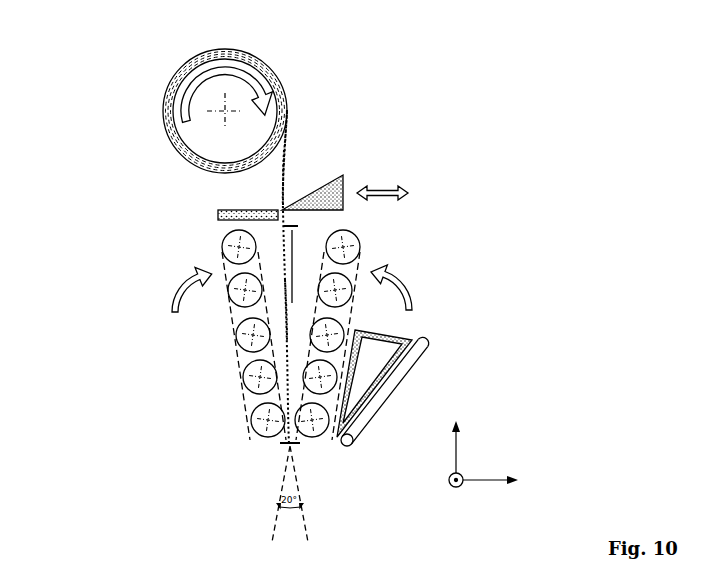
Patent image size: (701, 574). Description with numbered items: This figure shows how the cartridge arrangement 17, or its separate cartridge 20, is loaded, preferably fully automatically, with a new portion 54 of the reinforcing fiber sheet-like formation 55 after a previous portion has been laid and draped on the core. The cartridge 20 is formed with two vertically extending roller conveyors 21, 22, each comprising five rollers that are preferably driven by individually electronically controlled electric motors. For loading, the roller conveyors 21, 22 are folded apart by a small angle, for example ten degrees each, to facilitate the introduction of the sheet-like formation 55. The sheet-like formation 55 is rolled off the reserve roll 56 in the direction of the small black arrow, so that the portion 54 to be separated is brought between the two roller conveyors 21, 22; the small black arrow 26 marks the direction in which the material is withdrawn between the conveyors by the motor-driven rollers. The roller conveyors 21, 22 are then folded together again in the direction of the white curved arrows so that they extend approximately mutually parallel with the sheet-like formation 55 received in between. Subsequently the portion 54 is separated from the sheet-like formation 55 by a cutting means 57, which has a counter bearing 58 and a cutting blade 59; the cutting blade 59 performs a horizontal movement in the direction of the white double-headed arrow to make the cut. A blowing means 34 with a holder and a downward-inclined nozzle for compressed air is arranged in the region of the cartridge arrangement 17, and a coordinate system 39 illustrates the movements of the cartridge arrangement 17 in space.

The cartridge arrangement 17 is at (344, 89).
The cartridge 20 is at (285, 143).
The roller conveyor 21 is at (222, 243).
The roller conveyor 22 is at (360, 247).
The small black arrow 26 is at (293, 232).
The blowing means 34 is at (411, 336).
The coordinate system 39 is at (462, 475).
The portion 54 is at (282, 303).
The reinforcing fiber sheet-like formation 55 is at (289, 128).
The reserve roll 56 is at (163, 112).
The cutting means 57 is at (317, 152).
The counter bearing 58 is at (218, 212).
The cutting blade 59 is at (343, 175).